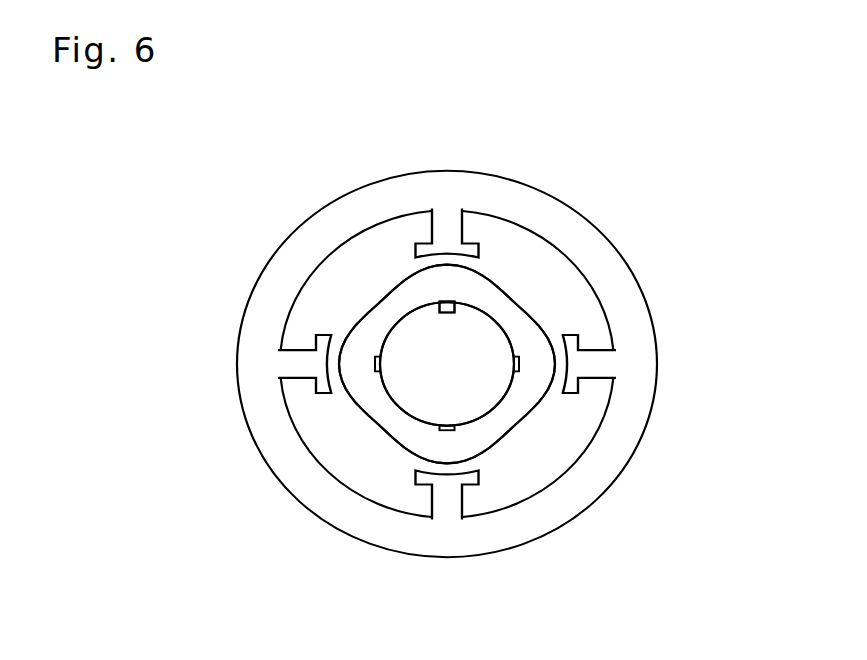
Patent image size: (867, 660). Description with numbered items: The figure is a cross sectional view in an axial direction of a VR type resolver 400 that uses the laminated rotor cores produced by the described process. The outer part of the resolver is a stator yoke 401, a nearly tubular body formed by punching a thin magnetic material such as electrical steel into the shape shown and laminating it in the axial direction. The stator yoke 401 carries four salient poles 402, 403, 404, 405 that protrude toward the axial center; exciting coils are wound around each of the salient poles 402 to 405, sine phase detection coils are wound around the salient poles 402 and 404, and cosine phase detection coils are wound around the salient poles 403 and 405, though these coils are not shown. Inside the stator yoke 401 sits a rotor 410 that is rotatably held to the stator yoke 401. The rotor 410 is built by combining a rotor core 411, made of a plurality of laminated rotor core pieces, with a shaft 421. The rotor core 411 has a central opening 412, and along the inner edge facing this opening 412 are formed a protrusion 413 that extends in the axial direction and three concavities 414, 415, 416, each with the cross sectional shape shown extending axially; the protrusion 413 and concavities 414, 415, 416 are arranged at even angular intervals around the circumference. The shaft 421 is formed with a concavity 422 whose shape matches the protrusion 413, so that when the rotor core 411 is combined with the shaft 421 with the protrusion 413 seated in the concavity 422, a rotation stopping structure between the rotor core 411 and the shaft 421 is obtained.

The VR type resolver 400 is at (625, 250).
The stator yoke 401 is at (505, 197).
The salient pole 402 is at (447, 220).
The salient pole 403 is at (600, 368).
The salient pole 404 is at (450, 505).
The salient pole 405 is at (292, 363).
The rotor 410 is at (505, 440).
The rotor core 411 is at (378, 410).
The opening 412 is at (403, 317).
The protrusion 413 is at (445, 303).
The concavity 414 is at (517, 368).
The concavity 415 is at (440, 430).
The concavity 416 is at (378, 366).
The shaft 421 is at (397, 345).
The concavity 422 is at (455, 307).